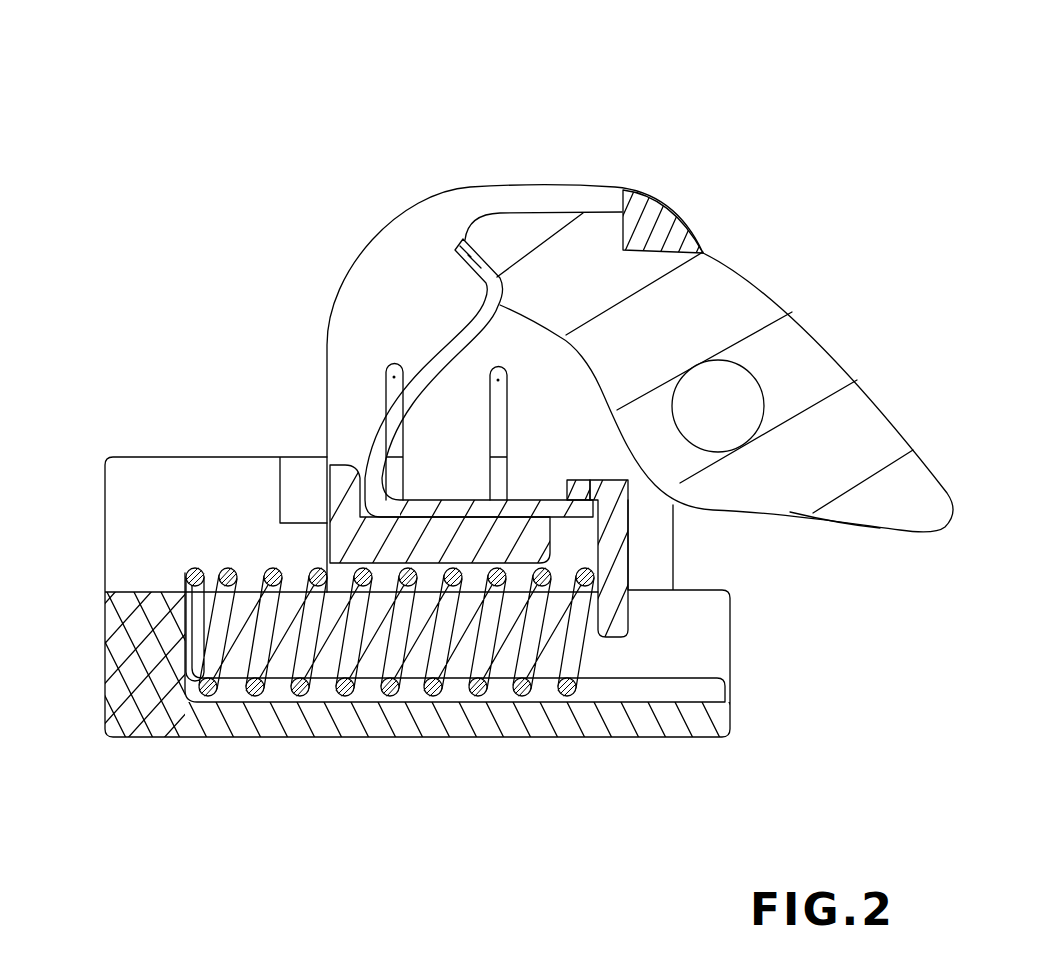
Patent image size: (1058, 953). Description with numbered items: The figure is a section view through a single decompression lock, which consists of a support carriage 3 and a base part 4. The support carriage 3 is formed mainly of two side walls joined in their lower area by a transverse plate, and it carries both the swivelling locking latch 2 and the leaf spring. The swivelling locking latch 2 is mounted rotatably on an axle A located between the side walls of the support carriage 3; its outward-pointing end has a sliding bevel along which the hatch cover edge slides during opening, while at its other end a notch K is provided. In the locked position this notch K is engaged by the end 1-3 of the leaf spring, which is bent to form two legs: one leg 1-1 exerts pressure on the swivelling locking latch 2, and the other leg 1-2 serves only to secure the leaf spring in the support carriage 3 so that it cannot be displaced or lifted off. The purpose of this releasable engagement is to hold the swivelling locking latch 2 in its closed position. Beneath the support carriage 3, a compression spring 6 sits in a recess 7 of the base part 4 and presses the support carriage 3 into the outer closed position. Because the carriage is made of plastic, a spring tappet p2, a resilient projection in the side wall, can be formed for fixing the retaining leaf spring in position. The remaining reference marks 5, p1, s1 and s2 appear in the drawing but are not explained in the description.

The swivelling locking latch 2 is at (757, 263).
The support carriage 3 is at (443, 190).
The base part 4 is at (160, 450).
The cam contact surface 5 is at (820, 527).
The compression spring 6 is at (428, 650).
The recess 7 is at (323, 643).
The leg of the leaf spring 1-1 is at (382, 415).
The leg of the leaf spring 1-2 is at (370, 488).
The end of the leaf spring 1-3 is at (487, 280).
The axle A is at (745, 372).
The notch K is at (580, 480).
The first pressure point p1 is at (568, 215).
The spring tappet p2 is at (445, 478).
The first guide pin s1 is at (385, 485).
The second guide pin s2 is at (600, 509).